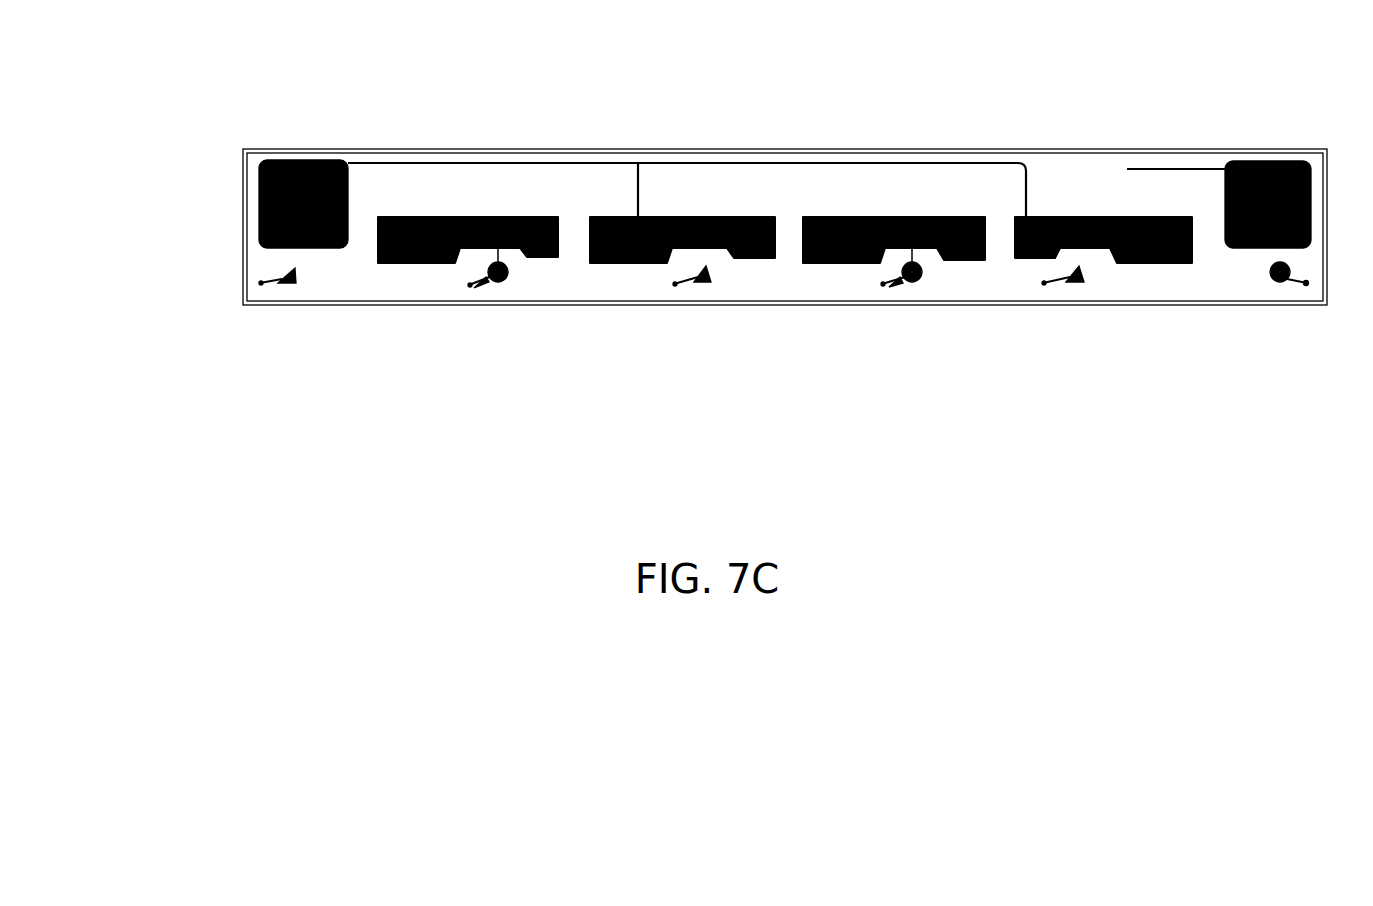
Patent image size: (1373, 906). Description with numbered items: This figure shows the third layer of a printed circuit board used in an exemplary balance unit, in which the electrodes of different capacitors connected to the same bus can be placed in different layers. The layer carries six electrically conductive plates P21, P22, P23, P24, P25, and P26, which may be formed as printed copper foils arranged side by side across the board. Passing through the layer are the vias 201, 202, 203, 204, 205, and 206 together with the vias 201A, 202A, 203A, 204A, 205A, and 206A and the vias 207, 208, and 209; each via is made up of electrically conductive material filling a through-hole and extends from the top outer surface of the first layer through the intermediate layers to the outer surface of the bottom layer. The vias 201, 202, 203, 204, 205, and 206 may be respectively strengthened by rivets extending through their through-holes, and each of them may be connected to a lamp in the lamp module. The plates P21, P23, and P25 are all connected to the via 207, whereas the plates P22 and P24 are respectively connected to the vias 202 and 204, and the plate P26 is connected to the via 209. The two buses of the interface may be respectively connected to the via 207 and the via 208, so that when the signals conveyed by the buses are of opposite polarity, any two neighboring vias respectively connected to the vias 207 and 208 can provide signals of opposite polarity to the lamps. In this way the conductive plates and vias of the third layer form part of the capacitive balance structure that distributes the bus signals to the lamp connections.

The electrically conductive plate P21 is at (338, 247).
The electrically conductive plate P22 is at (547, 217).
The electrically conductive plate P23 is at (625, 263).
The electrically conductive plate P24 is at (893, 217).
The electrically conductive plate P25 is at (1170, 263).
The electrically conductive plate P26 is at (1225, 170).
The via 201 is at (296, 283).
The via 201A is at (264, 284).
The via 202 is at (505, 281).
The via 202A is at (471, 286).
The via 203 is at (708, 279).
The via 203A is at (676, 285).
The via 204 is at (920, 281).
The via 204A is at (884, 285).
The via 205 is at (1083, 282).
The via 205A is at (1045, 284).
The via 206 is at (1269, 283).
The via 206A is at (1308, 284).
The via 207 is at (391, 161).
The via 208 is at (504, 193).
The via 209 is at (1126, 168).